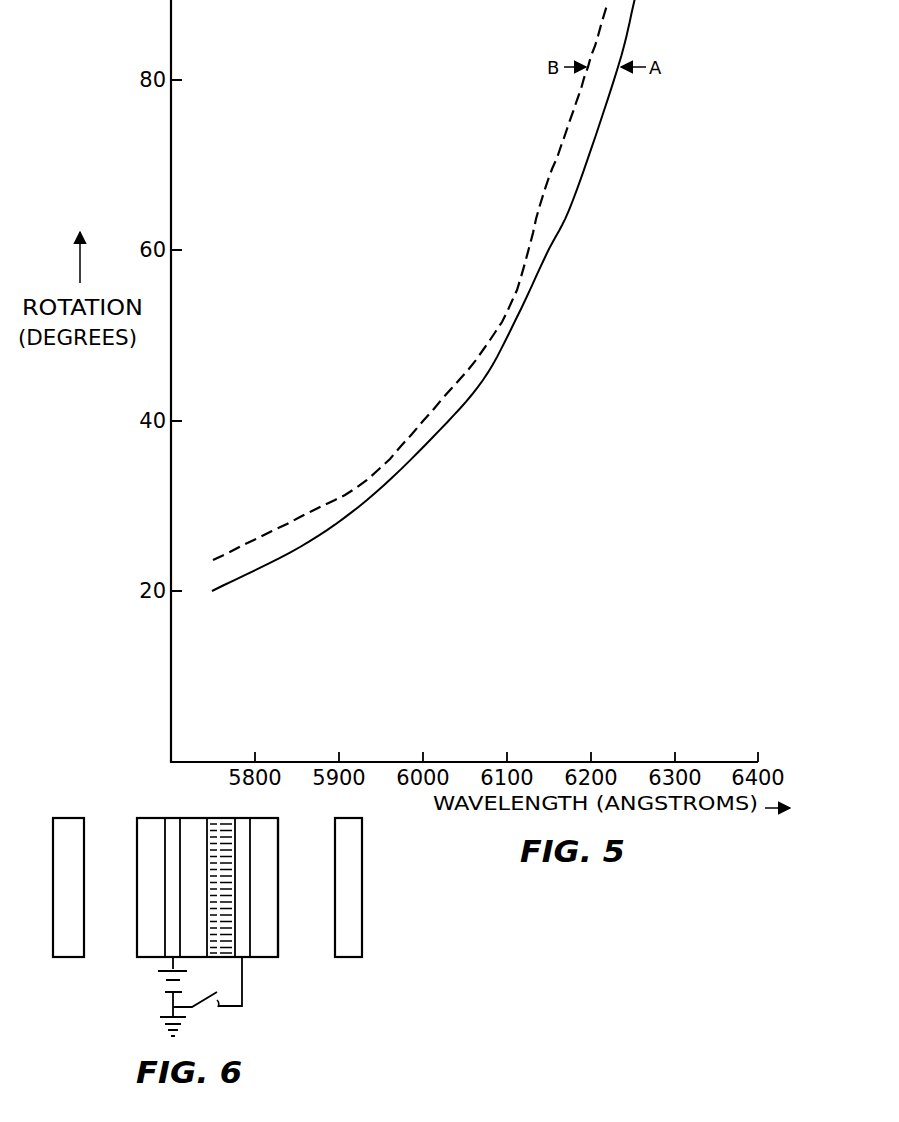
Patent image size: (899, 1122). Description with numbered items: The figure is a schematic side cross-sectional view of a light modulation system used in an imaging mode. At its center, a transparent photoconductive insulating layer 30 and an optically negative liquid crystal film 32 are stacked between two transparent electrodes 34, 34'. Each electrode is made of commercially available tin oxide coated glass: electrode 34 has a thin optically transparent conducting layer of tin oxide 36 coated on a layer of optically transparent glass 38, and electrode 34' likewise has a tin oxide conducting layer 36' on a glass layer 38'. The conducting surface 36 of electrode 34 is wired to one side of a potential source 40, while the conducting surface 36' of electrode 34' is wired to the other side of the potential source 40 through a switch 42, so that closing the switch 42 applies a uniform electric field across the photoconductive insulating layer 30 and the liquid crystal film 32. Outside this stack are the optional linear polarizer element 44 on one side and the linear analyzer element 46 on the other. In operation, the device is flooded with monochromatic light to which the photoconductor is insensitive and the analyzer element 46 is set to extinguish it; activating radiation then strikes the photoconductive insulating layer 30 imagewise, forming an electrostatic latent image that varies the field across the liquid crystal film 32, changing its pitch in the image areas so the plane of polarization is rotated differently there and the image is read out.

The photoconductive insulating layer 30 is at (191, 818).
The optically negative liquid crystal film 32 is at (222, 957).
The transparent electrode 34 is at (190, 867).
The transparent electrode 34' is at (287, 867).
The tin oxide conducting layer 36 is at (164, 875).
The tin oxide conducting layer 36' is at (229, 875).
The optically transparent glass layer 38 is at (134, 887).
The optically transparent glass layer 38' is at (274, 973).
The potential source 40 is at (162, 975).
The switch 42 is at (209, 1006).
The linear polarizer element 44 is at (67, 957).
The linear analyzer element 46 is at (345, 957).